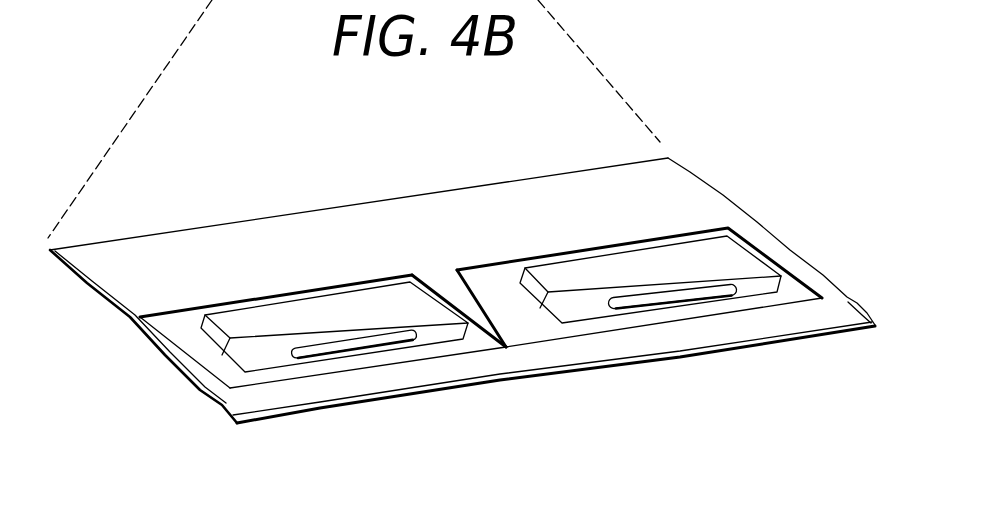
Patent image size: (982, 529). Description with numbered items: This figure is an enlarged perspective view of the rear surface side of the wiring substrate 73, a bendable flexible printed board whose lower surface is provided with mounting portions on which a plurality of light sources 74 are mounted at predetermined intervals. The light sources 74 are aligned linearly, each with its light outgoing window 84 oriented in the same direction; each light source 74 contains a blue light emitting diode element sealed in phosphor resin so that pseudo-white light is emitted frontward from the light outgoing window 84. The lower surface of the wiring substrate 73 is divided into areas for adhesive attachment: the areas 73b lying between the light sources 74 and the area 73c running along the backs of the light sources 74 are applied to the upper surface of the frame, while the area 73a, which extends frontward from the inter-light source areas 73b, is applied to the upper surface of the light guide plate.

The wiring substrate 73 is at (720, 180).
The area 73a is at (535, 355).
The areas 73b is at (483, 303).
The area 73c is at (240, 255).
The light source 74 is at (335, 308).
The light outgoing window 84 is at (372, 346).